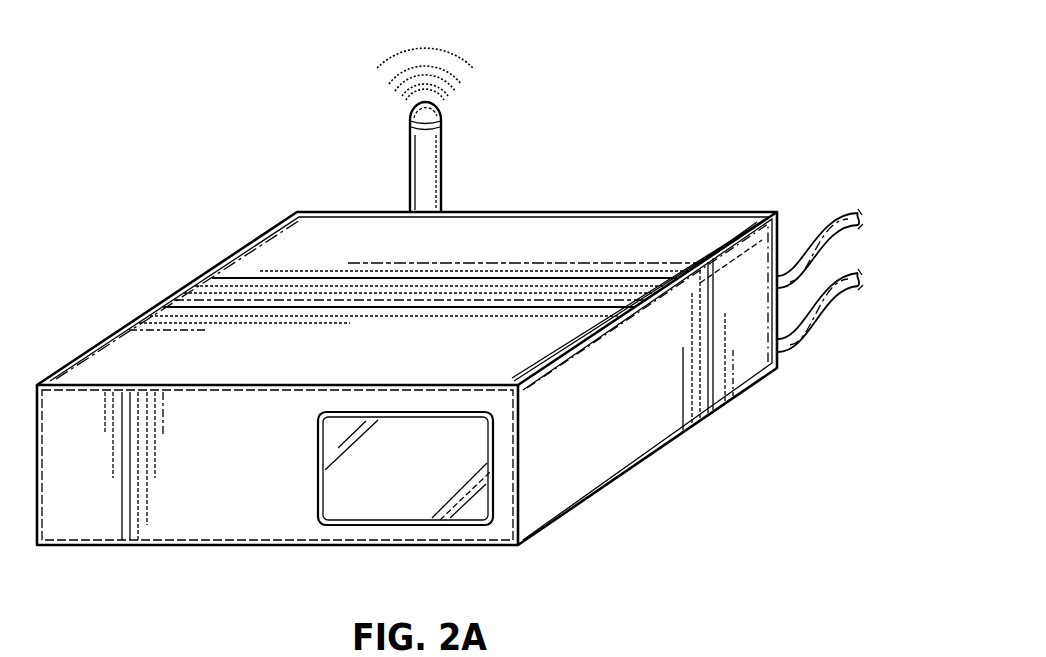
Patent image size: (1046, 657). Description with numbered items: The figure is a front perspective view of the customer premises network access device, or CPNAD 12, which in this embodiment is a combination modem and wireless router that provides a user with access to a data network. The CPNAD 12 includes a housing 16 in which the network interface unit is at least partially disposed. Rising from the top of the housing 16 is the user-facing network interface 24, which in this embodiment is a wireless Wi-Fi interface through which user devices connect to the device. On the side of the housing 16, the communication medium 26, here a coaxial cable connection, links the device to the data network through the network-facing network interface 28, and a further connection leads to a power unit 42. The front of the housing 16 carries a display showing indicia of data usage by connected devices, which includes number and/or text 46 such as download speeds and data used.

The customer premises network access device (CPNAD) 12 is at (407, 323).
The housing 16 is at (185, 285).
The user-facing network interface 24 is at (442, 157).
The communication medium 26 is at (821, 237).
The network-facing network interface 28 is at (442, 468).
The power unit 42 is at (808, 342).
The number and/or text 46 is at (453, 448).